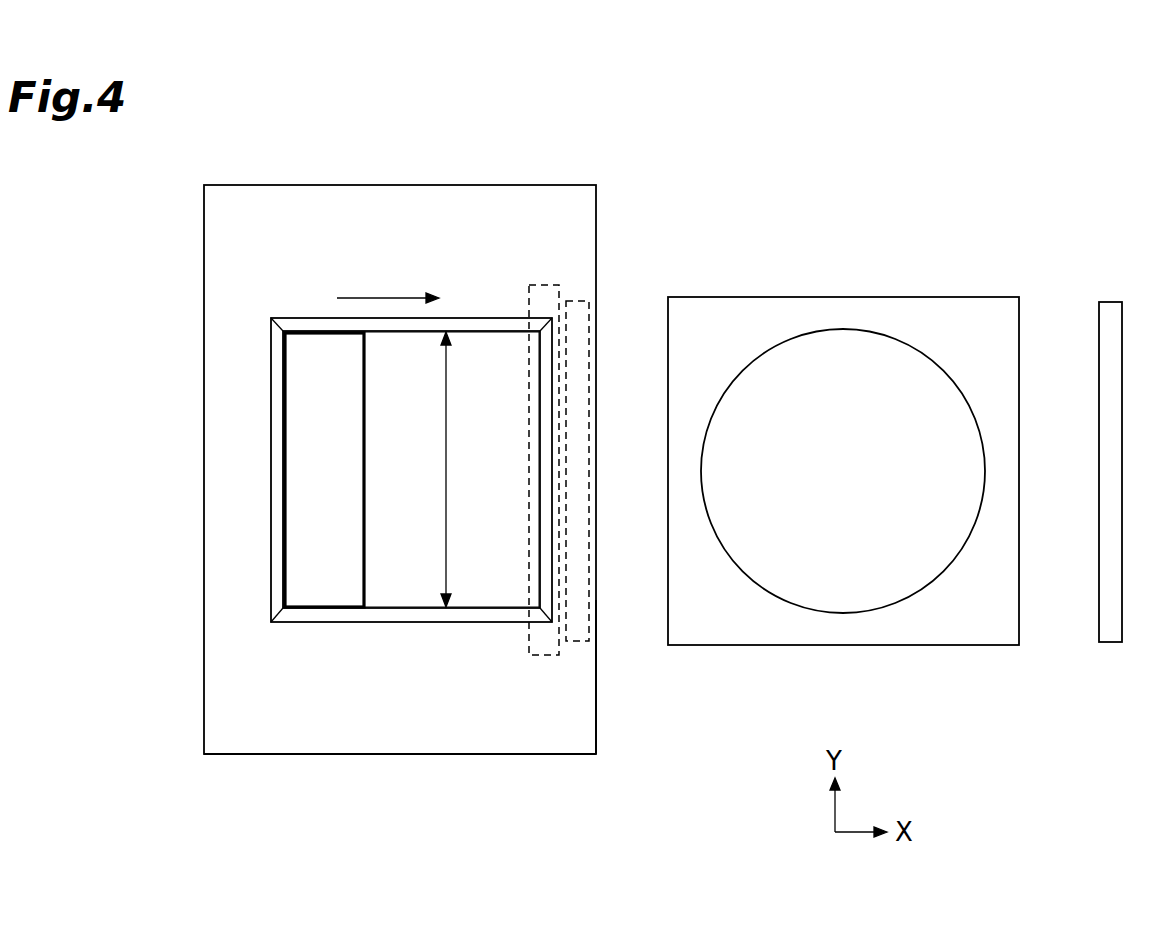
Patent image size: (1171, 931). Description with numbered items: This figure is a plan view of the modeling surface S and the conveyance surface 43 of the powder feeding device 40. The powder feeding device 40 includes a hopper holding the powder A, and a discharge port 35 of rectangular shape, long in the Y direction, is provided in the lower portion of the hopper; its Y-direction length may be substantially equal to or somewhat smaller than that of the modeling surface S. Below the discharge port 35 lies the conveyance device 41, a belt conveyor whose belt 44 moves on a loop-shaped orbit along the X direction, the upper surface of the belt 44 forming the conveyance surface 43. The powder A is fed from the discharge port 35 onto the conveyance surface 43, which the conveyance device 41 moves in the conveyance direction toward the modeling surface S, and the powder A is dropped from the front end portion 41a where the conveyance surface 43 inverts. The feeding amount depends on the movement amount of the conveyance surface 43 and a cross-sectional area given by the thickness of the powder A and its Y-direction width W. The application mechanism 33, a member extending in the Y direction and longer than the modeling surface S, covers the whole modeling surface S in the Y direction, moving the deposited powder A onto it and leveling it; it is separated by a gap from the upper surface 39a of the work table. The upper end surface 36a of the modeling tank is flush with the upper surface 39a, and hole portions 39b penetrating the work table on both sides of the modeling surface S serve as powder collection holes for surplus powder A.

The powder feeding device 40 is at (344, 541).
The conveyance device 41 is at (181, 716).
The front end portion 41a is at (608, 645).
The conveyance surface 43 is at (487, 724).
The belt 44 is at (305, 756).
The discharge port 35 is at (364, 538).
The powder A is at (402, 570).
The Y-direction width of the powder W is at (459, 469).
The application mechanism 33 is at (528, 300).
The upper surface of the work table 39a is at (629, 333).
The hole portion 39b is at (567, 320).
The upper end surface of the modeling tank 36a is at (968, 333).
The modeling surface S is at (838, 383).